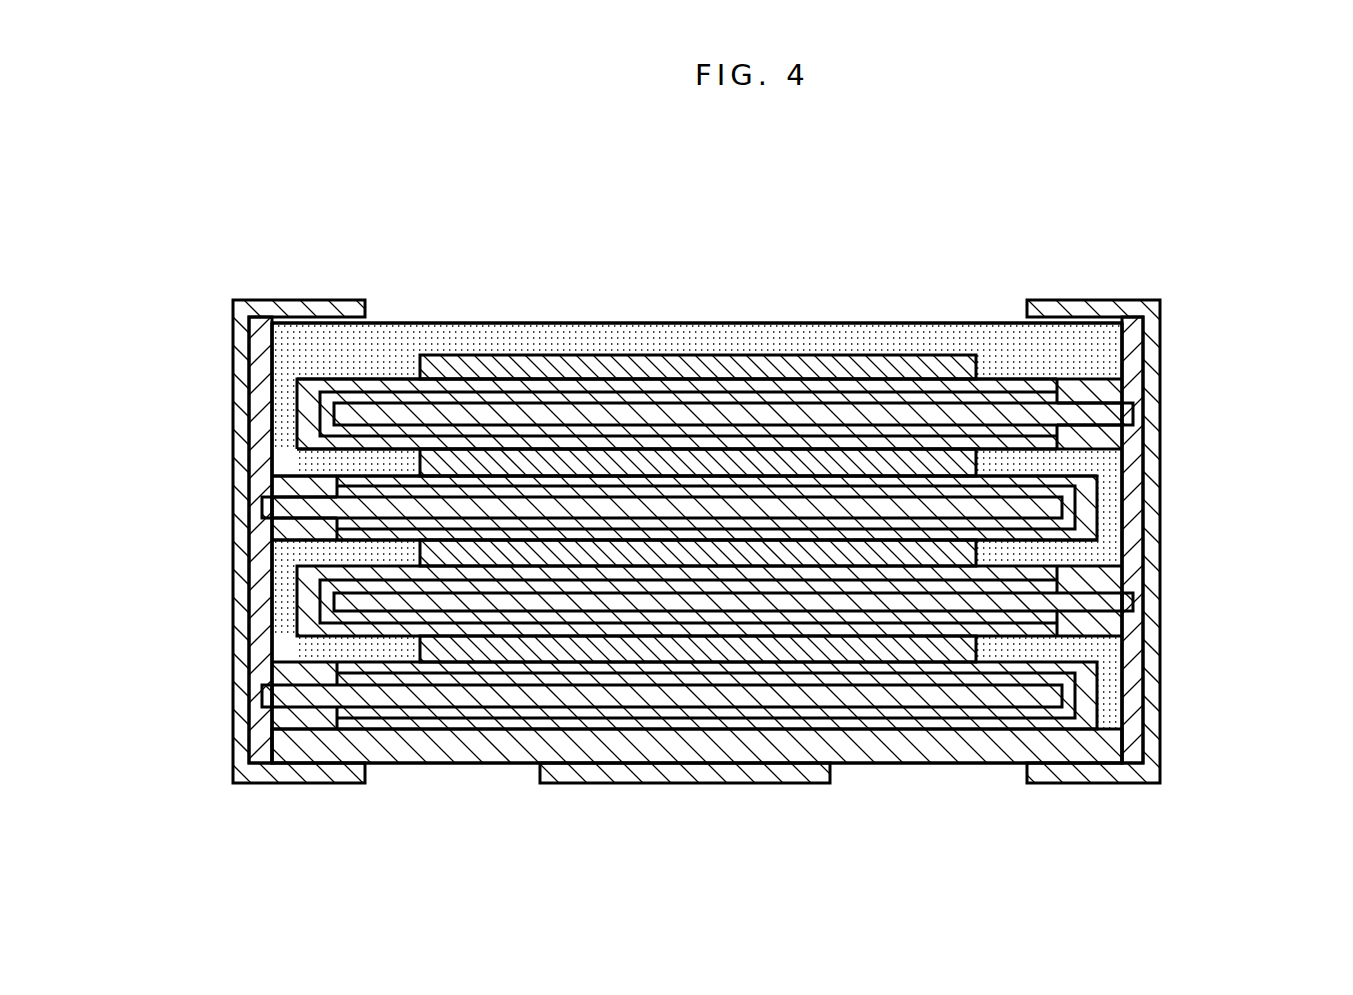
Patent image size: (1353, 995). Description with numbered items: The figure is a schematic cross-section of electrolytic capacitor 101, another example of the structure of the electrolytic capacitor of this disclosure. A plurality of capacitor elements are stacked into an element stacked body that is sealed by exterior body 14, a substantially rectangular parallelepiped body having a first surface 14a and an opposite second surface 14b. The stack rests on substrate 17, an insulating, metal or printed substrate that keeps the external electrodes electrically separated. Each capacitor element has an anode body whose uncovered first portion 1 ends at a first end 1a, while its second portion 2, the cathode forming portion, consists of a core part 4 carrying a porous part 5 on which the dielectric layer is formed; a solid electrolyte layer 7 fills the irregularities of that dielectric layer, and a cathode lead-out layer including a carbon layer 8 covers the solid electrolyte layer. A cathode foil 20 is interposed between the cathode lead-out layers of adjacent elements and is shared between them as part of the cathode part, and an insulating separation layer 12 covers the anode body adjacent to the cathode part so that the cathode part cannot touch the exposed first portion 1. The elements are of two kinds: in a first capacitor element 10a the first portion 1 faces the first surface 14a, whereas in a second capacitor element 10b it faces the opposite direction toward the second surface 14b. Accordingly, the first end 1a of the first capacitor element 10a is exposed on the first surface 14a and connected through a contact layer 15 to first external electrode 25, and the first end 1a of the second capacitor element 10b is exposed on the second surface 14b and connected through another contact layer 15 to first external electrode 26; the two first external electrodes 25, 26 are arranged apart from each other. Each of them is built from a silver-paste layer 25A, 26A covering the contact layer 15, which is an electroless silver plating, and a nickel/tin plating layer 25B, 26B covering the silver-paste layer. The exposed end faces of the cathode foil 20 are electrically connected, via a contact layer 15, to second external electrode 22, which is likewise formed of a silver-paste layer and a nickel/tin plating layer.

The electrolytic capacitor 101 is at (709, 492).
The first portion 1 is at (1070, 418).
The first end 1a is at (1134, 414).
The second portion 2 is at (756, 391).
The core part 4 is at (790, 415).
The porous part 5 is at (850, 400).
The solid electrolyte layer 7 is at (627, 378).
The carbon layer 8 is at (527, 378).
The first capacitor element 10a is at (1232, 440).
The second capacitor element 10b is at (709, 320).
The separation layer 12 is at (272, 553).
The exterior body 14 is at (385, 343).
The first surface 14a is at (268, 584).
The second surface 14b is at (1124, 582).
The contact layer 15 is at (258, 508).
The substrate 17 is at (637, 748).
The cathode foil 20 is at (466, 352).
The second external electrode 22 is at (748, 770).
The first external electrode 25 is at (239, 541).
The silver-paste layer 25A is at (238, 655).
The Ni/Sn plating layer 25B is at (255, 719).
The first external electrode 26 is at (1157, 541).
The silver-paste layer 26A is at (1150, 656).
The Ni/Sn plating layer 26B is at (1236, 622).